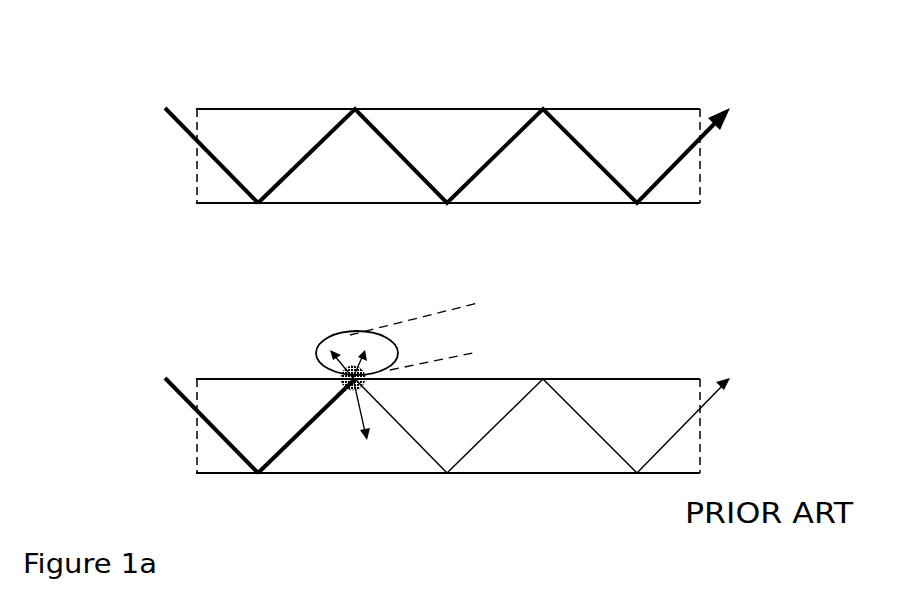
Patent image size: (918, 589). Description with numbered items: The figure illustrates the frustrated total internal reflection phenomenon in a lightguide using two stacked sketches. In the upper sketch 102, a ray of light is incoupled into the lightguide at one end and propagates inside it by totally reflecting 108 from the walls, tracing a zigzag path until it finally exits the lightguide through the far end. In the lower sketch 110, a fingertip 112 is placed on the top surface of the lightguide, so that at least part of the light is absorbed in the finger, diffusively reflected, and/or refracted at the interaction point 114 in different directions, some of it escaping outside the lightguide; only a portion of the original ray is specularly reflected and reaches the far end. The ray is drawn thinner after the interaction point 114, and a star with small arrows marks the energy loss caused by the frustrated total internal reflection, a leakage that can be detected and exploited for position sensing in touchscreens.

The sketch 102 is at (401, 119).
The total reflection 108 is at (543, 109).
The sketch 110 is at (416, 397).
The fingertip 112 is at (397, 371).
The interaction point 114 is at (353, 376).